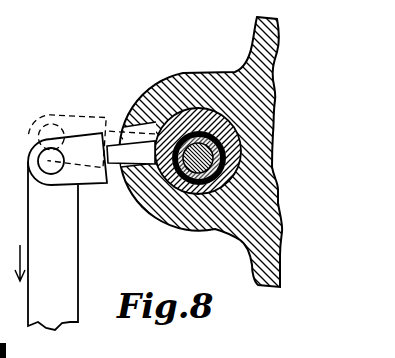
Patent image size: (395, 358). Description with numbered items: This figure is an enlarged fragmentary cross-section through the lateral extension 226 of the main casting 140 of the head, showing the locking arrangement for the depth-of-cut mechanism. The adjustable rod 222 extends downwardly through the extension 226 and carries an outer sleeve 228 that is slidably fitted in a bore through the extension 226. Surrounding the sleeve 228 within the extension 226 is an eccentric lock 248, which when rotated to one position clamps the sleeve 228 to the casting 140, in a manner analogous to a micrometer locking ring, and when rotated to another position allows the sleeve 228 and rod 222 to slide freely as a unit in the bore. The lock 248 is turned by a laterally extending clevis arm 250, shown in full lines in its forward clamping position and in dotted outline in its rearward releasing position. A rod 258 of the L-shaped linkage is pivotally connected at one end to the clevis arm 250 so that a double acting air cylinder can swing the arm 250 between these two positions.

The main casting 140 is at (279, 205).
The adjustable rod 222 is at (193, 168).
The lateral extension 226 is at (184, 222).
The outer sleeve 228 is at (198, 147).
The eccentric lock 248 is at (196, 108).
The clevis arm 250 is at (82, 140).
The rod 258 is at (78, 247).